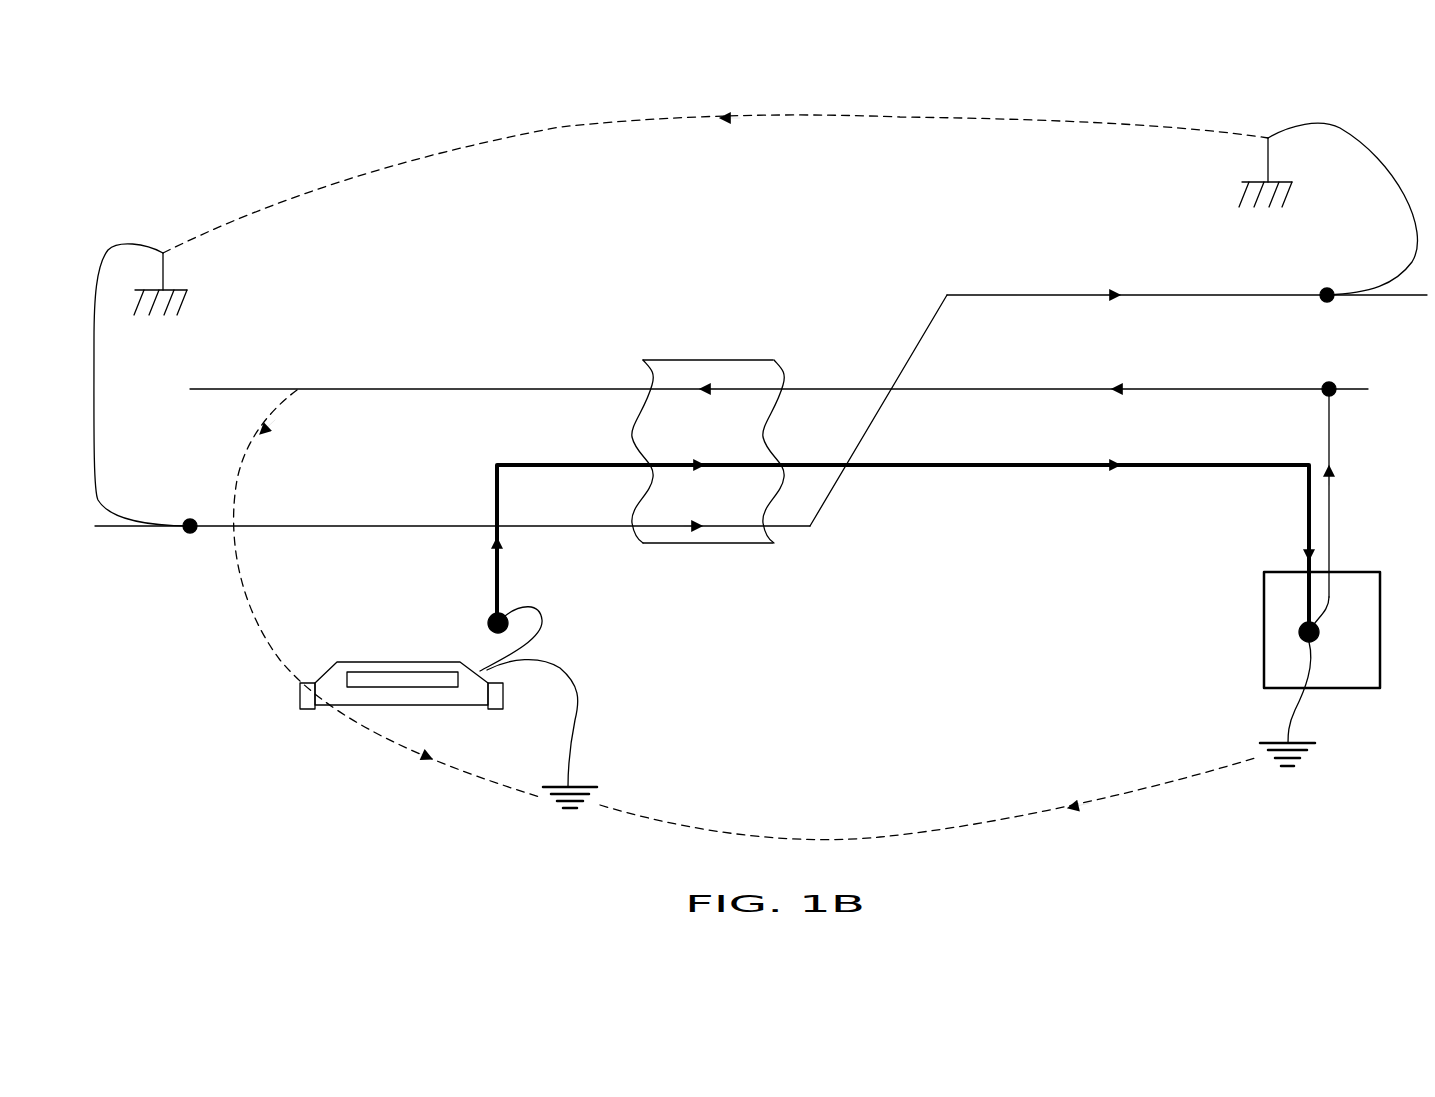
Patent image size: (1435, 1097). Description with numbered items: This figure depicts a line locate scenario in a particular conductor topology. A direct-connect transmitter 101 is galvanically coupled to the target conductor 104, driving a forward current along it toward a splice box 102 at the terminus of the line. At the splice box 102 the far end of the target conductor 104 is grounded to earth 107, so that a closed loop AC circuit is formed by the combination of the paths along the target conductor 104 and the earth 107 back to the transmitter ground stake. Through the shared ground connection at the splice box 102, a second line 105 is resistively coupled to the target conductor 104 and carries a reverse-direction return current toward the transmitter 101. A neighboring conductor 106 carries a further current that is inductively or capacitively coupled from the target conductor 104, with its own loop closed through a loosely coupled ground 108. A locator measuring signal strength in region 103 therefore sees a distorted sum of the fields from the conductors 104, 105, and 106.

The transmitter 101 is at (287, 707).
The splice box 102 is at (1260, 613).
The region 103 is at (748, 356).
The target conductor 104 is at (982, 475).
The line 105 is at (1052, 382).
The neighboring conductor 106 is at (1063, 285).
The earth 107 is at (978, 813).
The loosely coupled ground 108 is at (617, 132).